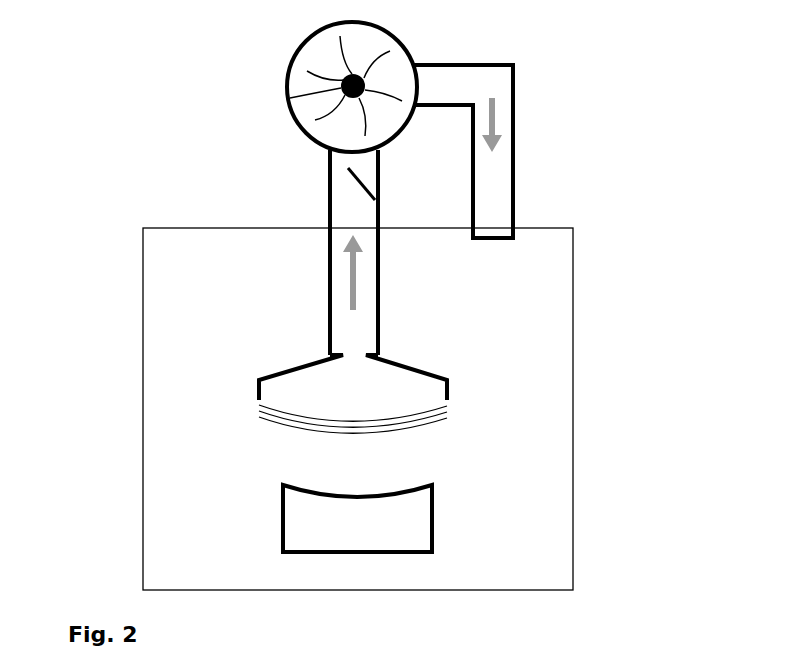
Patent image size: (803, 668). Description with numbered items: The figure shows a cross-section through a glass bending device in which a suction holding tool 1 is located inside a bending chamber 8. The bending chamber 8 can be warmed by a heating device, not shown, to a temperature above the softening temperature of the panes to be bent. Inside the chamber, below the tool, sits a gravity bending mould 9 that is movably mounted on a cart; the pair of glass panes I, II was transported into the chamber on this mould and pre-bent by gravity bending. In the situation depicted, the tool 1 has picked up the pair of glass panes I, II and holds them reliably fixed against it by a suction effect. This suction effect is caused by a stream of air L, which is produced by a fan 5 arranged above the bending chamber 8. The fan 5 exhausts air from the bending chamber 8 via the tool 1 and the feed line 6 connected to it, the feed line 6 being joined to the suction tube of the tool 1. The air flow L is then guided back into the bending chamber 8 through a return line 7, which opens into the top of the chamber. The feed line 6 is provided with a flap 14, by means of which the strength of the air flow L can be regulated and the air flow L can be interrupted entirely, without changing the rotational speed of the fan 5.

The tool 1 is at (418, 368).
The fan 5 is at (340, 88).
The feed line 6 is at (327, 200).
The return line 7 is at (500, 172).
The bending chamber 8 is at (142, 315).
The gravity bending mould 9 is at (414, 526).
The flap 14 is at (330, 175).
The air flow L is at (350, 274).
The glass pane I is at (447, 407).
The glass pane II is at (447, 413).